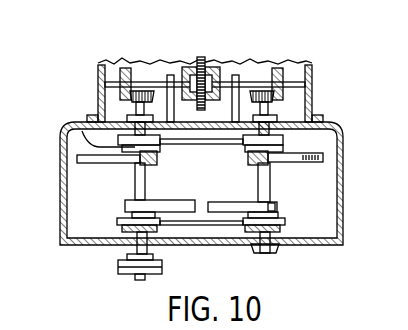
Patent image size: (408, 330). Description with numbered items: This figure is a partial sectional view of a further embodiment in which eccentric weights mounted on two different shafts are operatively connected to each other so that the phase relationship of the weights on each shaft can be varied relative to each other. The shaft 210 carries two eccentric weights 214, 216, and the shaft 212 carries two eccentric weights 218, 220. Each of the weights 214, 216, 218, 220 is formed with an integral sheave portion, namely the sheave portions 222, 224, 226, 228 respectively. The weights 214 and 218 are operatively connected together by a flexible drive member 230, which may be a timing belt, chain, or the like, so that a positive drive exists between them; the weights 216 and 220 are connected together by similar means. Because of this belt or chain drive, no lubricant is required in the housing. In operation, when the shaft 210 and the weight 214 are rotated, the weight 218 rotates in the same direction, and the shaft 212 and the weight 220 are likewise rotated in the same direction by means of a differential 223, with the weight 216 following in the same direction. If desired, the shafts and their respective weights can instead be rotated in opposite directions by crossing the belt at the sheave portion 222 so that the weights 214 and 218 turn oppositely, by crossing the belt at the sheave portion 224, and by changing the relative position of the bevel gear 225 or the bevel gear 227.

The shaft 210 is at (142, 281).
The shaft 212 is at (266, 233).
The eccentric weight 214 is at (78, 156).
The eccentric weight 216 is at (125, 208).
The eccentric weight 218 is at (323, 157).
The eccentric weight 220 is at (277, 207).
The sheave portion 222 is at (84, 122).
The differential 223 is at (225, 45).
The sheave portion 224 is at (122, 232).
The bevel gear 225 is at (127, 68).
The sheave portion 226 is at (283, 137).
The bevel gear 227 is at (278, 68).
The sheave portion 228 is at (280, 228).
The flexible drive member 230 is at (180, 146).